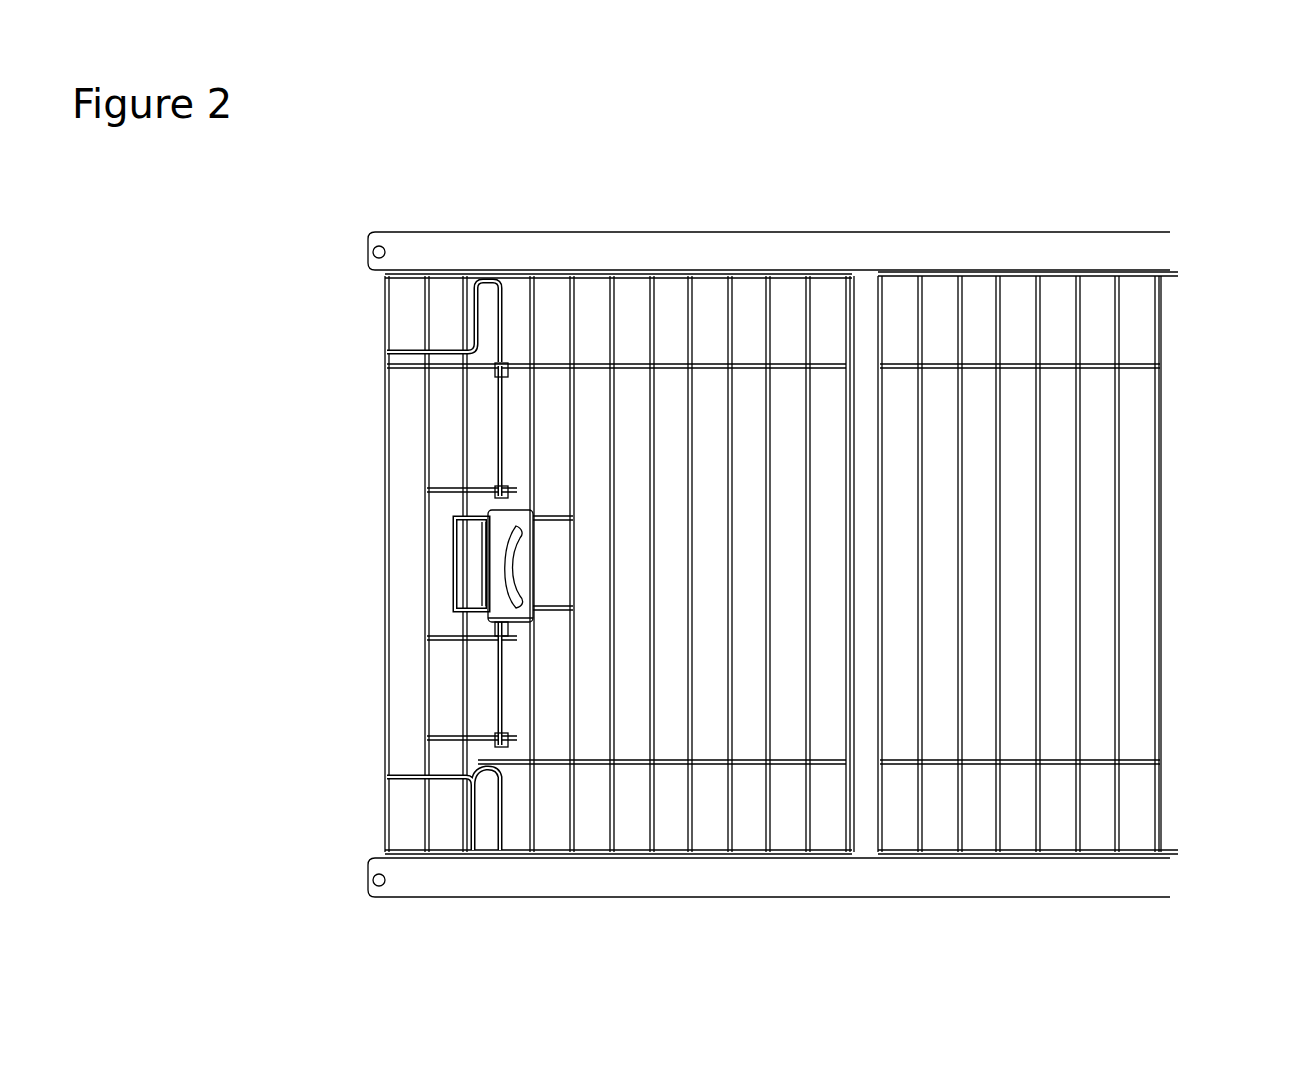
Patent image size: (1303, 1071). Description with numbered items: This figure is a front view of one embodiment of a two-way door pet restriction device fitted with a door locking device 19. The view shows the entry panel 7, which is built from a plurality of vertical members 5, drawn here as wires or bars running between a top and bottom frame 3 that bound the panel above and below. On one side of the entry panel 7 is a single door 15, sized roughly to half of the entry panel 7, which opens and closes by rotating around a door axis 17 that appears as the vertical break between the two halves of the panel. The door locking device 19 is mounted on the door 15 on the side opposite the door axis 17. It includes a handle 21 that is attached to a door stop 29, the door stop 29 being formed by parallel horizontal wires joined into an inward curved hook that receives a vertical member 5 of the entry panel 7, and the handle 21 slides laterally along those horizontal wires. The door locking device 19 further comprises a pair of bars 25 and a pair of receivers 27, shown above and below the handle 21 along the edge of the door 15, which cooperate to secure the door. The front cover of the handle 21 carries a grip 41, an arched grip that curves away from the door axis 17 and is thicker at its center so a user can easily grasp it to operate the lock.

The top and bottom frame 3 is at (713, 244).
The vertical members 5 is at (1160, 505).
The entry panel 7 is at (1193, 665).
The door 15 is at (593, 707).
The door axis 17 is at (853, 525).
The door locking device 19 is at (470, 595).
The handle 21 is at (497, 618).
The pair of bars 25 is at (470, 364).
The pair of receivers 27 is at (477, 444).
The door stop 29 is at (437, 565).
The grip 41 is at (488, 512).